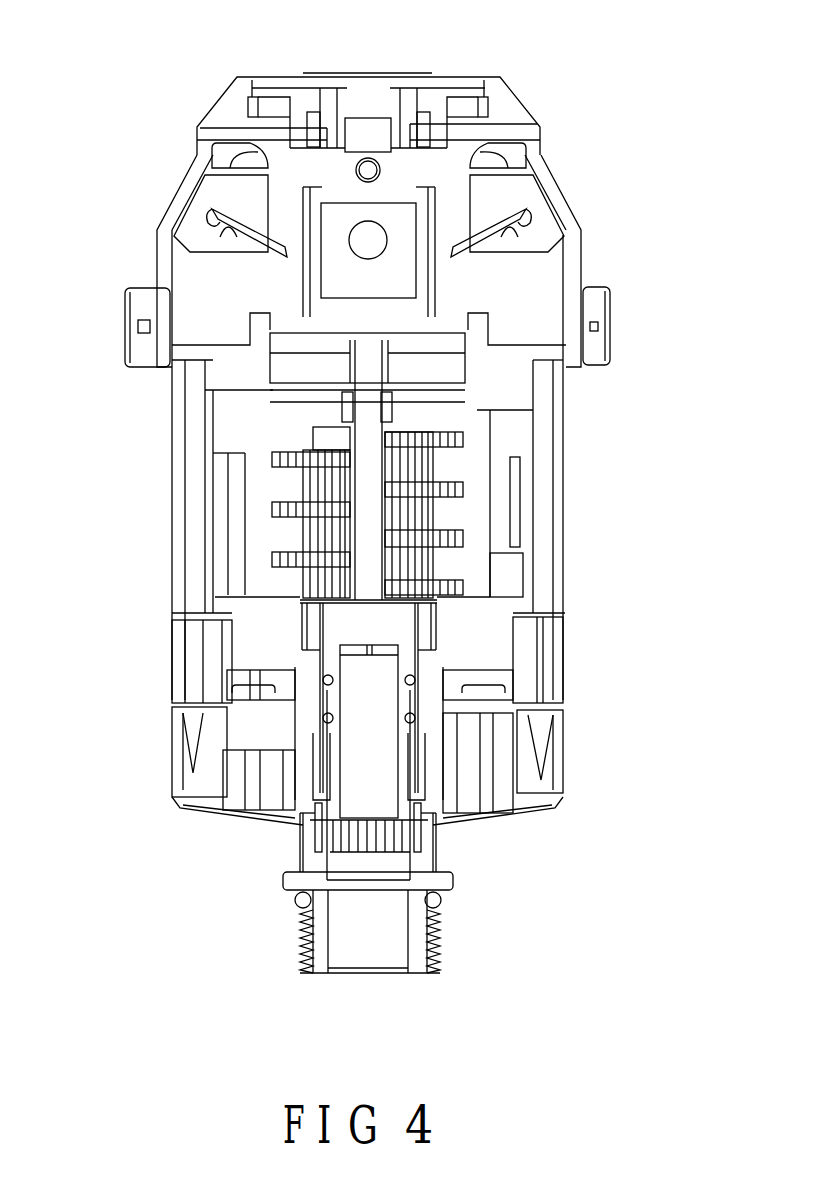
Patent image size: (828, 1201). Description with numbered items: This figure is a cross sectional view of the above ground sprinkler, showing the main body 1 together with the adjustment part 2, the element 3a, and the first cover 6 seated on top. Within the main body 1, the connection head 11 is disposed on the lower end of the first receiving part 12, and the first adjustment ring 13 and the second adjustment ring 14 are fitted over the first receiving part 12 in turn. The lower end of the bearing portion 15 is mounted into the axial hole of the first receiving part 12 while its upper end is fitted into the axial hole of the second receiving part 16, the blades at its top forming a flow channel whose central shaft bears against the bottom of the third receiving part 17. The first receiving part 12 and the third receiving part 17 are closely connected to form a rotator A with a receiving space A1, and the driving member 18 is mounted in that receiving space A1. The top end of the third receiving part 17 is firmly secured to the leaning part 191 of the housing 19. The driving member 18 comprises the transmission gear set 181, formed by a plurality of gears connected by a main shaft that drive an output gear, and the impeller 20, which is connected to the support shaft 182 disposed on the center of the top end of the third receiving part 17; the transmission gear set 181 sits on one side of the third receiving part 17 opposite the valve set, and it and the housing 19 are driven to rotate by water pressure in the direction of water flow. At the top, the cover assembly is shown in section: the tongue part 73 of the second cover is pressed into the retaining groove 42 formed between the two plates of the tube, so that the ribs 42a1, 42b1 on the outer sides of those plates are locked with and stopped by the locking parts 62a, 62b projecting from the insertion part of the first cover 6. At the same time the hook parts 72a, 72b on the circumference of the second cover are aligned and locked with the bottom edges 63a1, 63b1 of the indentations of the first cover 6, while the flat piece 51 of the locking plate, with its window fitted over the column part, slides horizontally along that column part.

The main body 1 is at (662, 478).
The adjustment part 2 is at (124, 310).
The upper housing 3a is at (153, 223).
The first cover 6 is at (542, 124).
The connection head 11 is at (430, 935).
The first receiving part 12 is at (563, 800).
The first adjustment ring 13 is at (563, 752).
The second adjustment ring 14 is at (563, 672).
The bearing portion 15 is at (323, 625).
The second receiving part 16 is at (520, 574).
The third receiving part 17 is at (513, 437).
The driving member 18 is at (478, 583).
The housing 19 is at (555, 555).
The impeller 20 is at (295, 368).
The retaining groove 42 is at (336, 120).
The rib 42a1 is at (357, 135).
The rib 42b1 is at (410, 118).
The flat piece 51 is at (312, 133).
The locking part 62a is at (352, 130).
The locking part 62b is at (407, 106).
The bottom edge 63a1 is at (247, 100).
The bottom edge 63b1 is at (490, 104).
The hook part 72a is at (245, 107).
The hook part 72b is at (492, 112).
The tongue part 73 is at (385, 112).
The transmission gear set 181 is at (273, 466).
The support shaft 182 is at (470, 405).
The leaning part 191 is at (560, 380).
The rotator A is at (206, 477).
The receiving space A1 is at (250, 442).